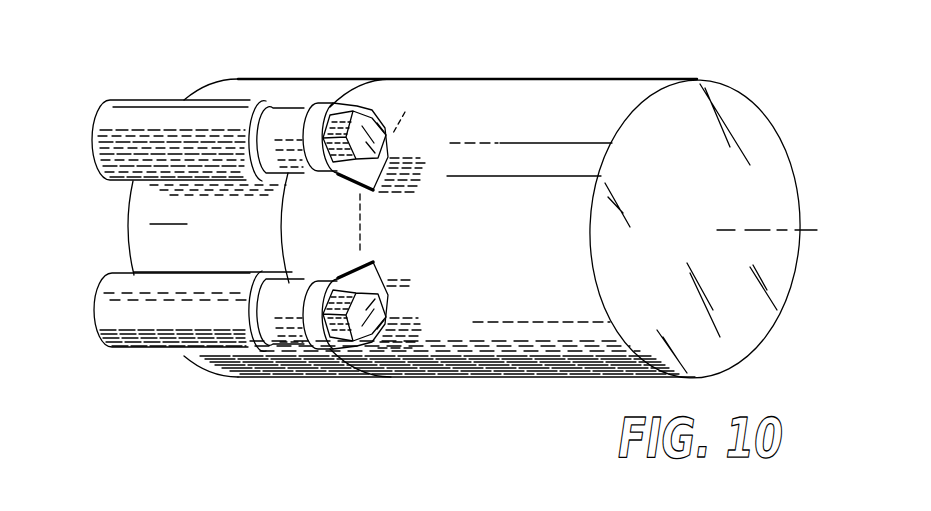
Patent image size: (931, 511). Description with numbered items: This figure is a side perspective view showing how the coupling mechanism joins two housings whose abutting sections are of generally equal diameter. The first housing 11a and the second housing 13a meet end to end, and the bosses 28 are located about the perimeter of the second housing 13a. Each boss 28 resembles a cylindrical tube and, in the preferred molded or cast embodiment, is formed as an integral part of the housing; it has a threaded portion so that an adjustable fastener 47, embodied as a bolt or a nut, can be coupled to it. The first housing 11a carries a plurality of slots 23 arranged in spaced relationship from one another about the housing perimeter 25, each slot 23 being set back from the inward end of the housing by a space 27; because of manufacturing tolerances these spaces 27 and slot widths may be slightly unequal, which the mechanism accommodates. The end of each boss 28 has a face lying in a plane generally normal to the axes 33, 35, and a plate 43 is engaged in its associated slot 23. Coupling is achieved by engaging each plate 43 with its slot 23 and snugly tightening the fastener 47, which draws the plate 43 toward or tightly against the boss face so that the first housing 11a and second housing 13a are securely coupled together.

The first housing 11a is at (632, 97).
The second housing 13a is at (327, 80).
The axis 33 is at (863, 230).
The axis 35 is at (110, 223).
The space 27 is at (312, 178).
The boss 28 is at (150, 113).
The plate 43 is at (390, 150).
The adjustable fastener 47 is at (363, 113).
The housing perimeter 25 is at (390, 147).
The slot 23 is at (373, 263).